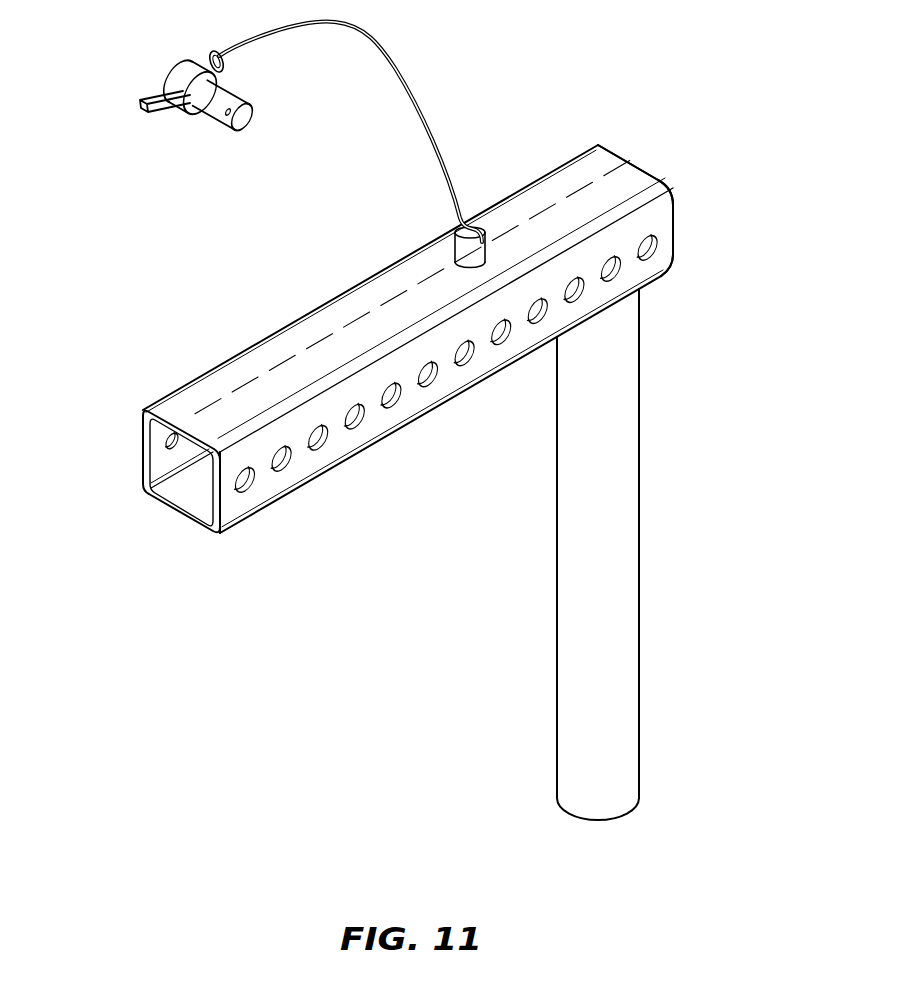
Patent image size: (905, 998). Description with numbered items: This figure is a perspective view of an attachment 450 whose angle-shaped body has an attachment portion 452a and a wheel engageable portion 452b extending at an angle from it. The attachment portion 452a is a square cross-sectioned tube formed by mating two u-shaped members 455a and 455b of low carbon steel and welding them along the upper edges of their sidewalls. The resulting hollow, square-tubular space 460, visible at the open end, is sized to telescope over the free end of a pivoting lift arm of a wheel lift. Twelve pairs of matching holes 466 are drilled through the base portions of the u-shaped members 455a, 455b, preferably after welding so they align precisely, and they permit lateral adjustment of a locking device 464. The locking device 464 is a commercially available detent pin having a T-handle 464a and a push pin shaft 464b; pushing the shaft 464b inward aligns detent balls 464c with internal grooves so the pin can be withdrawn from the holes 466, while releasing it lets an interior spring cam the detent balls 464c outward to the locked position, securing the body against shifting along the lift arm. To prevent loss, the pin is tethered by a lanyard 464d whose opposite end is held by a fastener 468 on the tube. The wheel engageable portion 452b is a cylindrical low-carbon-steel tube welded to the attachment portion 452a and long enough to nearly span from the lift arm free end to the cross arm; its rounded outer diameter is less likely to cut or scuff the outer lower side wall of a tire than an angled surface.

The attachment 450 is at (203, 324).
The attachment portion 452a is at (556, 207).
The wheel engageable portion 452b is at (598, 553).
The u-shaped member 455a is at (660, 223).
The u-shaped member 455b is at (155, 437).
The hollow square-tubular space 460 is at (195, 505).
The locking device 464 is at (124, 114).
The T-handle 464a is at (187, 98).
The push pin shaft 464b is at (232, 100).
The detent balls 464c is at (226, 114).
The lanyard 464d is at (393, 63).
The holes 466 is at (462, 342).
The fastener 468 is at (480, 252).